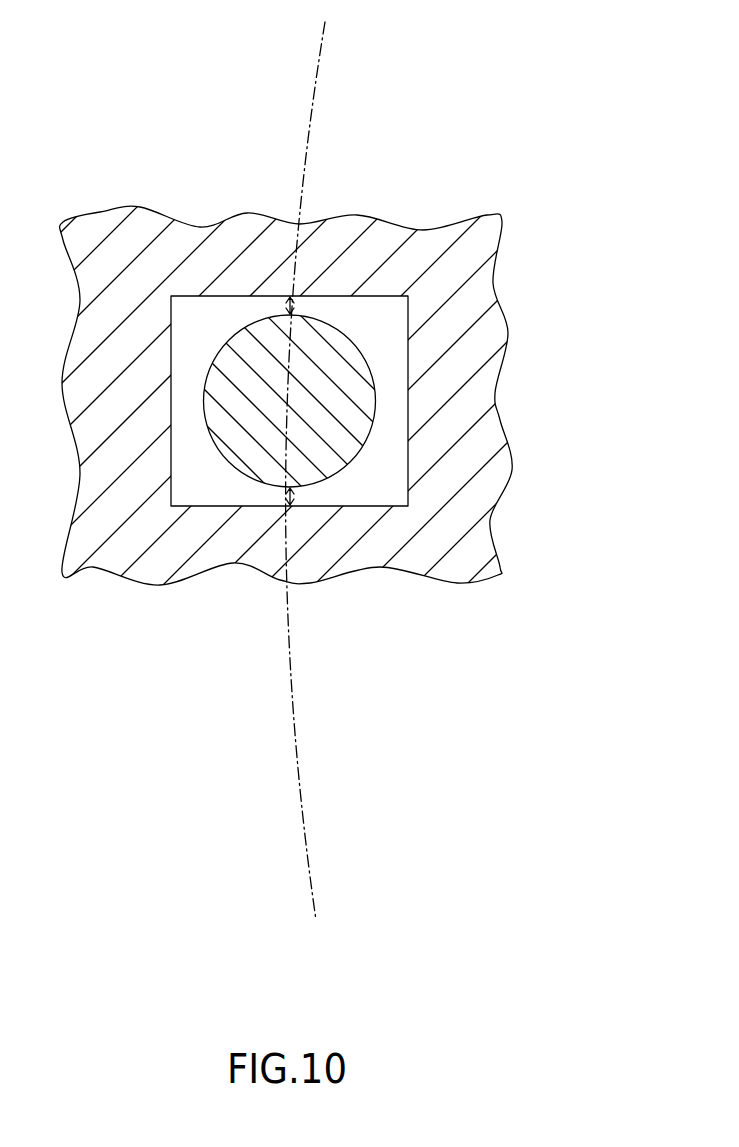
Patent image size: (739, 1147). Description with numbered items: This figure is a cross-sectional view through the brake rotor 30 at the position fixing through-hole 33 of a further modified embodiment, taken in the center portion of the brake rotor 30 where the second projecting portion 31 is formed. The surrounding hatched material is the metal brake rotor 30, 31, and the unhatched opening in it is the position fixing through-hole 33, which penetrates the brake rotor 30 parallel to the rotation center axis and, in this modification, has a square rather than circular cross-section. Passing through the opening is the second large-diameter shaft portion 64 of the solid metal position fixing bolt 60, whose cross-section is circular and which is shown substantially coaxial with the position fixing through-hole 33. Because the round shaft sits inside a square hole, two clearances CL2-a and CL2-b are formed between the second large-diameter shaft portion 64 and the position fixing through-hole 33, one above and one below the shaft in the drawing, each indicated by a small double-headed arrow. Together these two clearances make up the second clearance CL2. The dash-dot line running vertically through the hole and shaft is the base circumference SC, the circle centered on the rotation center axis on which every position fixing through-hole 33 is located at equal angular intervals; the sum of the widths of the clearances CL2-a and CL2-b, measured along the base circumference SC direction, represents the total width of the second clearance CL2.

The brake rotor 30 is at (369, 400).
The second projecting portion 31 is at (485, 243).
The position fixing through-hole 33 is at (410, 380).
The position fixing bolt 60 is at (339, 400).
The second large-diameter shaft portion 64 is at (358, 427).
The second clearance CL2 is at (488, 459).
The clearance CL2-a is at (296, 303).
The clearance CL2-b is at (294, 497).
The base circumference SC is at (323, 38).